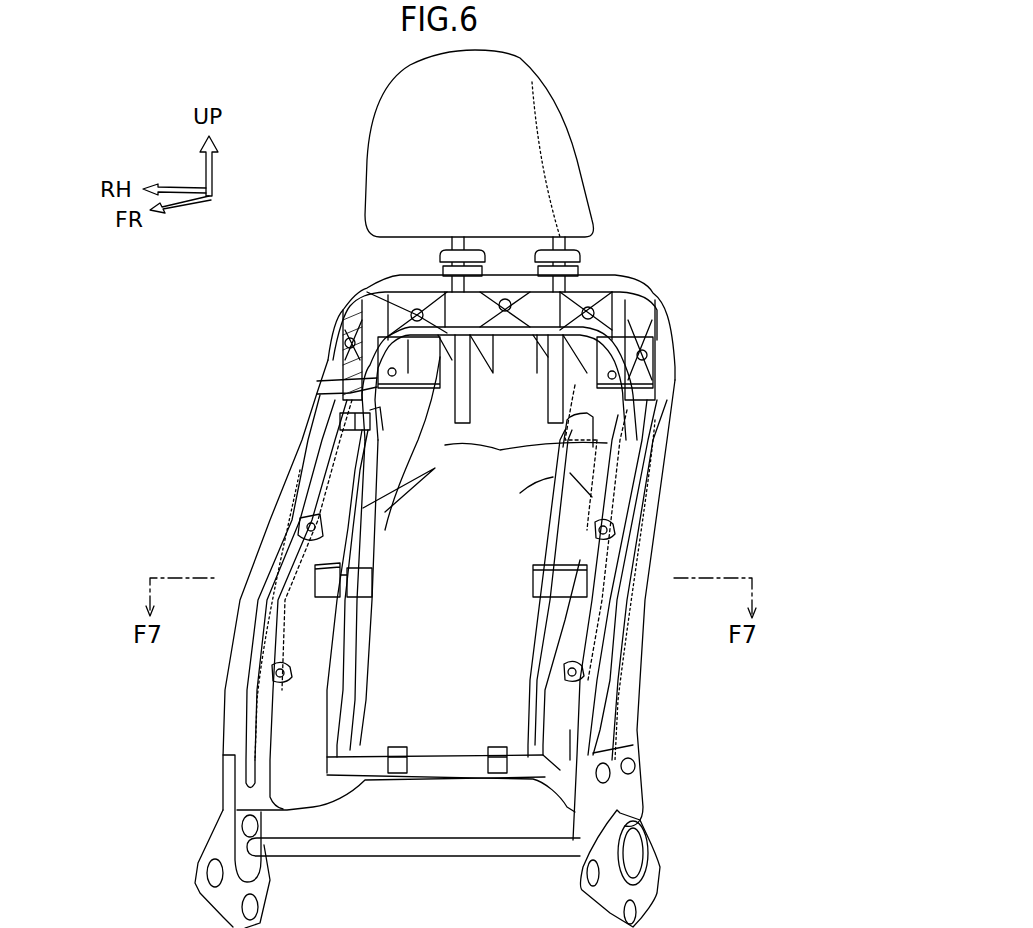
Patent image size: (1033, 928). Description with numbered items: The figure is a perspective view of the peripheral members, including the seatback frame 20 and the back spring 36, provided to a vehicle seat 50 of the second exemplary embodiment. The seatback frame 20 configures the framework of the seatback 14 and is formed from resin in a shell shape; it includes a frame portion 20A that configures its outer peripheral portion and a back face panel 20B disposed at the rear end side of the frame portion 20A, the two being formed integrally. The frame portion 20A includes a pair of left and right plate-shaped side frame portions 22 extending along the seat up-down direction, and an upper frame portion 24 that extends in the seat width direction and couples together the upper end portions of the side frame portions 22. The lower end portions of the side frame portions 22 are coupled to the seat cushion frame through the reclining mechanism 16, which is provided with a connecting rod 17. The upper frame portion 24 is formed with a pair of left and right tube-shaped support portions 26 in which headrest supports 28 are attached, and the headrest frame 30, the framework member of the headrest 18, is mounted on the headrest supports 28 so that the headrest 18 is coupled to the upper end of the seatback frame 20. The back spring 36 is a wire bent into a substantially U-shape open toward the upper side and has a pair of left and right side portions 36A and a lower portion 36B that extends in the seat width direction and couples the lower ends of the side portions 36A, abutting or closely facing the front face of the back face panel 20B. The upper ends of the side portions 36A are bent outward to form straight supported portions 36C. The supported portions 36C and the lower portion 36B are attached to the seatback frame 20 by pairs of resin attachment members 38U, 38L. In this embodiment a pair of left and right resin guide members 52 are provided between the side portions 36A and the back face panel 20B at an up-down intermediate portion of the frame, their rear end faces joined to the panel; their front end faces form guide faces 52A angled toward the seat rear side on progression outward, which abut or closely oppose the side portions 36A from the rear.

The seatback 14 is at (688, 290).
The reclining mechanism 16 is at (672, 826).
The connecting rod 17 is at (437, 858).
The headrest 18 is at (572, 135).
The seatback frame 20 is at (690, 340).
The frame portion 20A is at (215, 725).
The back face panel 20B is at (520, 477).
The side frame portions 22 is at (227, 660).
The upper frame portion 24 is at (498, 270).
The support portions 26 is at (413, 280).
The headrest supports 28 is at (437, 245).
The headrest frame 30 is at (463, 393).
The back spring 36 is at (342, 512).
The side portions 36A is at (340, 663).
The lower portion 36B is at (447, 765).
The supported portions 36C is at (370, 378).
The attachment members 38U is at (335, 417).
The attachment members 38L is at (393, 767).
The vehicle seat 50 is at (752, 180).
The guide members 52 is at (372, 568).
The guide faces 52A is at (317, 567).